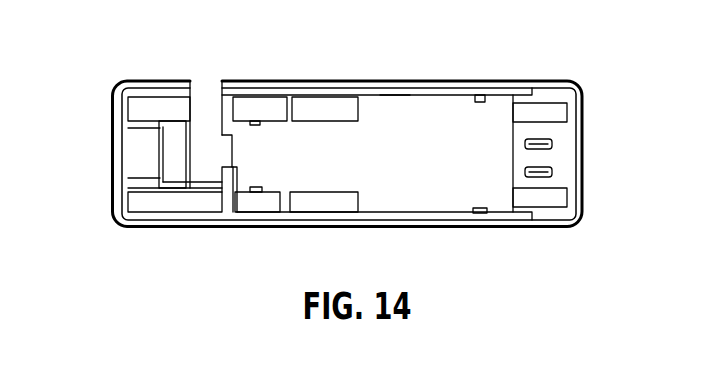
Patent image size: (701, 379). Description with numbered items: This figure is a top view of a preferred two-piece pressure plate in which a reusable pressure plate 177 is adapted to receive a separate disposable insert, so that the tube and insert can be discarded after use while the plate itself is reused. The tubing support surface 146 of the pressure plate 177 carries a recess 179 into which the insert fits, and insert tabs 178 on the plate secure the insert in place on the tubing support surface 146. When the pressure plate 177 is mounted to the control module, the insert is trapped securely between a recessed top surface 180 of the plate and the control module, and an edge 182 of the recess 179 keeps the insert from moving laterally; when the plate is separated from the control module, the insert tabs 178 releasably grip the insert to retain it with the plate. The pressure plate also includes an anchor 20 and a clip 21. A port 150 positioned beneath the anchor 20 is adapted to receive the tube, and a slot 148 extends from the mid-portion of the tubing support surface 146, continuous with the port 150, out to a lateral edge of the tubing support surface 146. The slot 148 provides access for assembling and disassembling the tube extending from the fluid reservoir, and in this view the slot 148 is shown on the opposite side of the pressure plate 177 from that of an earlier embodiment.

The slot 148 is at (206, 90).
The reusable pressure plate 177 is at (523, 81).
The recess 179 is at (394, 99).
The edge of recess 182 is at (392, 205).
The insert tabs 178 is at (256, 122).
The port 150 is at (137, 155).
The anchor 20 is at (158, 162).
The recessed top surface 180 is at (393, 170).
The tubing support surface 146 is at (518, 135).
The clip 21 is at (538, 178).